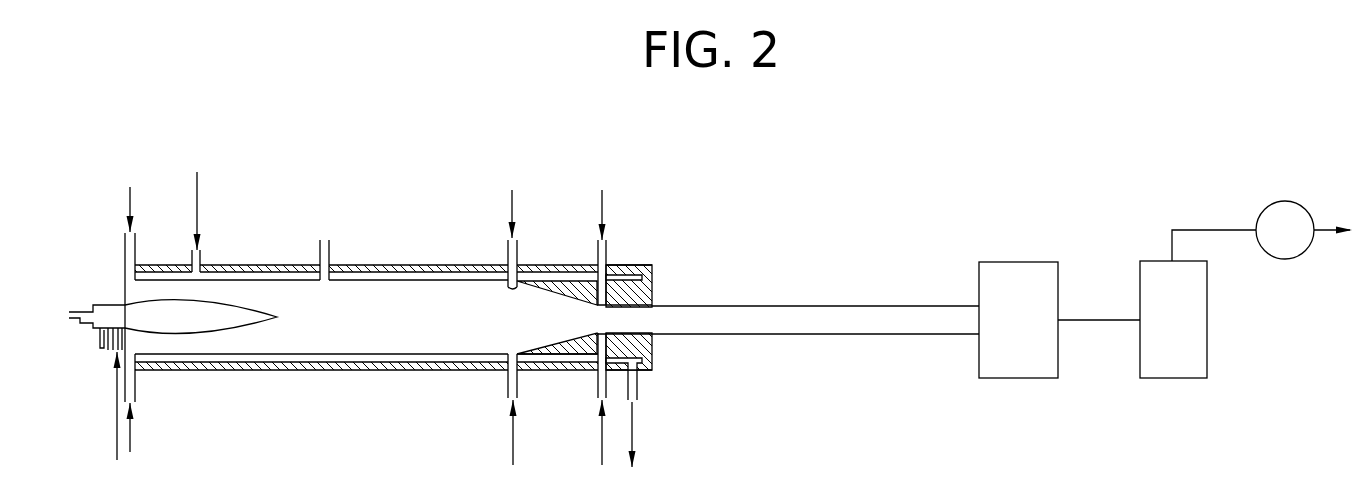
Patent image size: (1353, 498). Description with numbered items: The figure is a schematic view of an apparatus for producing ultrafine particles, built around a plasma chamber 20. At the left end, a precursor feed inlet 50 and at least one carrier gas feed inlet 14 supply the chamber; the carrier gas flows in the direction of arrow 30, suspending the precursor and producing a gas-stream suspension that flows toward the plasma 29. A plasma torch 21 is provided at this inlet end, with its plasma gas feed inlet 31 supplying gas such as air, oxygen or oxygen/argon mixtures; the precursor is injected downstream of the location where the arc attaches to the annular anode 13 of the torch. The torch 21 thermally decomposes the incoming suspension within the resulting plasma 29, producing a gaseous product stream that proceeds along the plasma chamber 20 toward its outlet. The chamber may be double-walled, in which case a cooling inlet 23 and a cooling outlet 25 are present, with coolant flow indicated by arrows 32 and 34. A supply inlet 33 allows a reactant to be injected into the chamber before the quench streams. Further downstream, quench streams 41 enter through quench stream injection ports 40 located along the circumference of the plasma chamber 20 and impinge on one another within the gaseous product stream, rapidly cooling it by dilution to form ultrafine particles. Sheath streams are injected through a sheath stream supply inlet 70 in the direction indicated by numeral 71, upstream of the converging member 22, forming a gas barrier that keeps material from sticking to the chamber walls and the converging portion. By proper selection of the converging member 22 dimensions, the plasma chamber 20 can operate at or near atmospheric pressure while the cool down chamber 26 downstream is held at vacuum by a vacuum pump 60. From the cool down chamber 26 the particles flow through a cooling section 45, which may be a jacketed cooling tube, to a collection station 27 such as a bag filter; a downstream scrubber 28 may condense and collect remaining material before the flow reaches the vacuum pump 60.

The annular anode 13 is at (112, 305).
The carrier gas feed inlet 14 is at (108, 373).
The plasma chamber 20 is at (342, 393).
The plasma torch 21 is at (145, 260).
The converging member 22 is at (490, 270).
The cooling inlet 23 is at (202, 257).
The cooling outlet 25 is at (637, 385).
The cool down chamber 26 is at (652, 292).
The collection station 27 is at (1037, 335).
The scrubber 28 is at (1190, 335).
The plasma 29 is at (207, 320).
The carrier gas flow direction arrow 30 is at (120, 421).
The plasma gas feed inlet 31 is at (73, 307).
The coolant inlet flow arrow 32 is at (199, 192).
The reactant supply inlet 33 is at (332, 263).
The coolant outlet flow arrow 34 is at (632, 428).
The quench stream injection ports 40 is at (597, 247).
The quench streams 41 is at (603, 200).
The cooling section 45 is at (898, 306).
The precursor feed inlet 50 is at (100, 340).
The vacuum pump 60 is at (1282, 200).
The sheath stream supply inlet 70 is at (125, 247).
The sheath stream flow direction 71 is at (127, 202).